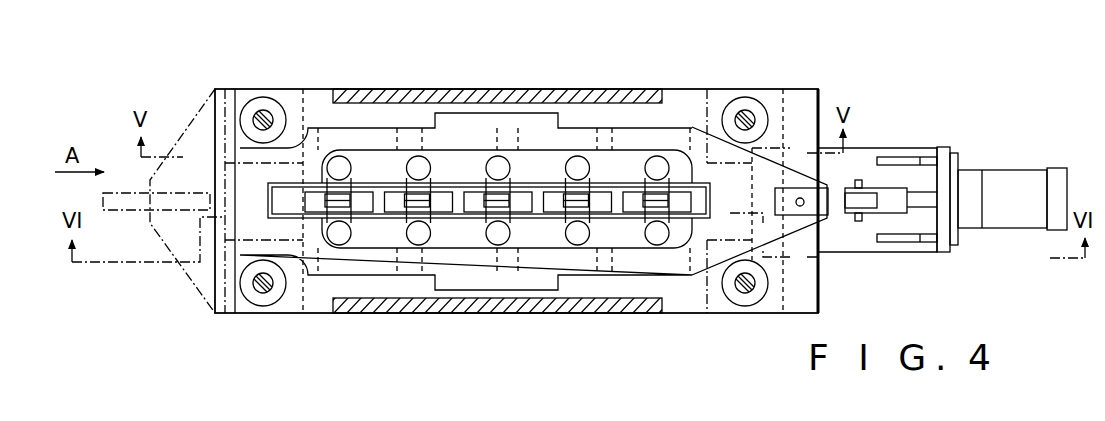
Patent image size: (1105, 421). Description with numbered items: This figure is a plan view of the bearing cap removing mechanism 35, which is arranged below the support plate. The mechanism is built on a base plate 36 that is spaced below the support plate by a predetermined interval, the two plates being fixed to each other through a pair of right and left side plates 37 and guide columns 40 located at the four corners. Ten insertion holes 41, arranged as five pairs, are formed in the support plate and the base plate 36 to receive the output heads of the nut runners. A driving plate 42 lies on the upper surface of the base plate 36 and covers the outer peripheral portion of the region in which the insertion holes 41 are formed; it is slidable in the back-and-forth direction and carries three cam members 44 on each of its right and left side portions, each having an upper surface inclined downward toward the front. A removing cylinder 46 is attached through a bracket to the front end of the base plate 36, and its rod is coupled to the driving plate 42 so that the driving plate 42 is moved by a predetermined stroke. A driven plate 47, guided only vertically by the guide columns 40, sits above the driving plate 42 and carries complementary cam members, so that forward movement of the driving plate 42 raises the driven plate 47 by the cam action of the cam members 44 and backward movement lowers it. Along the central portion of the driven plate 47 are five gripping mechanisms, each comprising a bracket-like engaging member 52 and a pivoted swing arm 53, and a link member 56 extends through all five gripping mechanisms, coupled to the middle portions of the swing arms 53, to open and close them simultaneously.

The bearing cap removing mechanism 35 is at (866, 80).
The base plate 36 is at (686, 89).
The side plates 37 is at (597, 90).
The guide columns 40 is at (268, 114).
The insertion holes 41 is at (508, 232).
The driving plate 42 is at (807, 232).
The cam members 44 is at (377, 270).
The removing cylinder 46 is at (1019, 178).
The driven plate 47 is at (175, 258).
The engaging member 52 is at (473, 193).
The swing arm 53 is at (522, 190).
The link member 56 is at (452, 213).